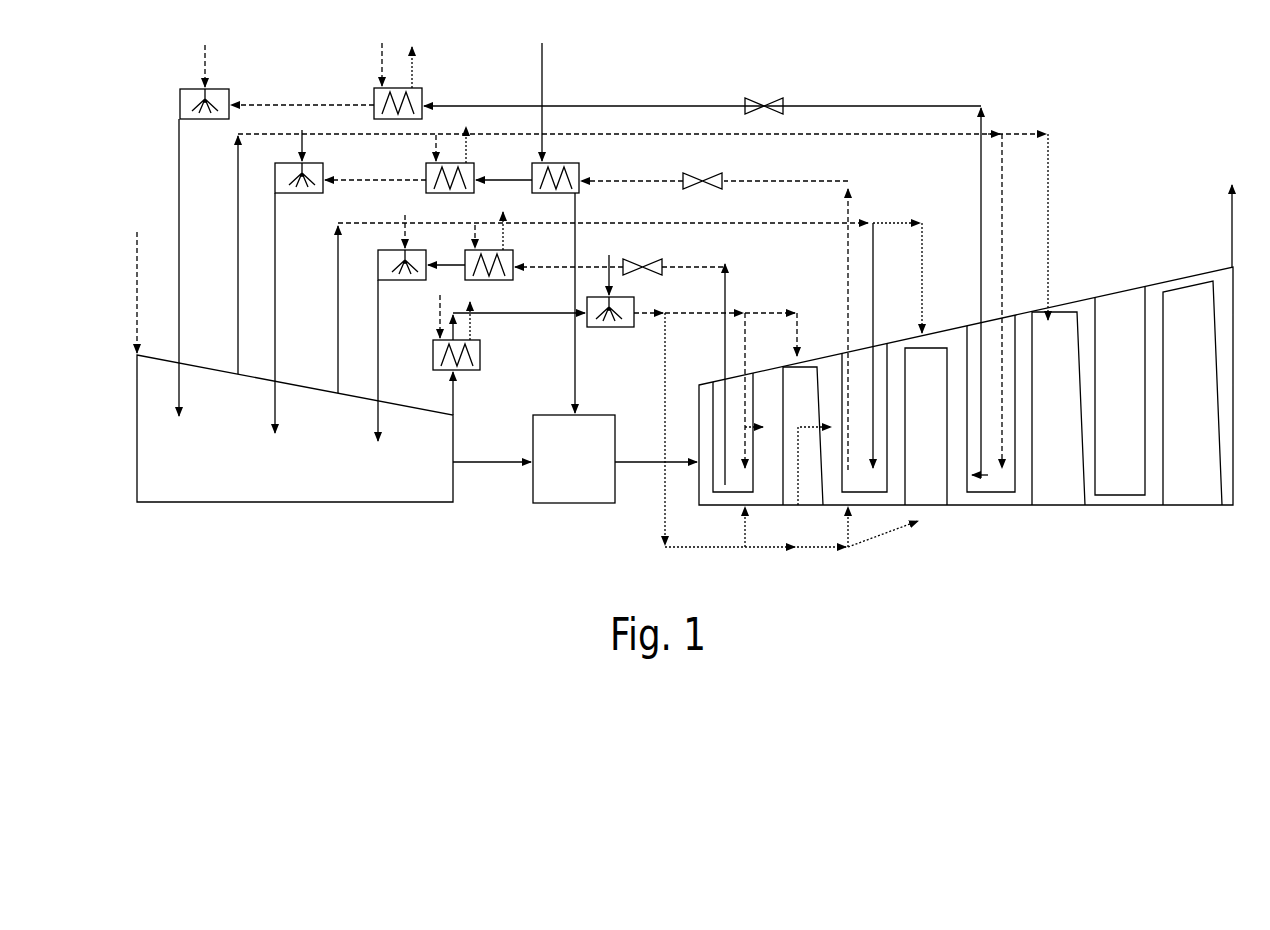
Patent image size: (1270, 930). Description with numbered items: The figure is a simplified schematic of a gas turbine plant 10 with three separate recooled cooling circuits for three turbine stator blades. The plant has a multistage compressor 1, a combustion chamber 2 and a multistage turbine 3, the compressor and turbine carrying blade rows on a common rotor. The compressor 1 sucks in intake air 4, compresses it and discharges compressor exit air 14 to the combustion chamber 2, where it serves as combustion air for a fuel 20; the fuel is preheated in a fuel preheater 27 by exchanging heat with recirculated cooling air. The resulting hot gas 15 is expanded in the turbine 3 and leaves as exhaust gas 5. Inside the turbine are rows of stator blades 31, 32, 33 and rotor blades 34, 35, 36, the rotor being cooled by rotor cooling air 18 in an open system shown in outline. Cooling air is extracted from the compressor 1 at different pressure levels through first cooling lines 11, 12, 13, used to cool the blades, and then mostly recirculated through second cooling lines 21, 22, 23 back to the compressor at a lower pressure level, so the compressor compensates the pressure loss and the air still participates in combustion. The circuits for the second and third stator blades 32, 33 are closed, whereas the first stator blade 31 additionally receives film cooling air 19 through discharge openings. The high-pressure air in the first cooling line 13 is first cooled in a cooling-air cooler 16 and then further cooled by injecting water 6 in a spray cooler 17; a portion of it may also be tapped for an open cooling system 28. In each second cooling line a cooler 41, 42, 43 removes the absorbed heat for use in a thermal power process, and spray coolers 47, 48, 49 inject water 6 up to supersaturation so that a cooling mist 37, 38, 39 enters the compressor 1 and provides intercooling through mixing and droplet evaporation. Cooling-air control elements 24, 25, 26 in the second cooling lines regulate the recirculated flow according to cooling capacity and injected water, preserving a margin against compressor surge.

The multistage compressor 1 is at (200, 464).
The combustion chamber 2 is at (562, 474).
The multistage turbine 3 is at (885, 474).
The intake air 4 is at (137, 245).
The exhaust gas 5 is at (1232, 200).
The water 6 is at (205, 48).
The gas turbine plant 10 is at (490, 560).
The first cooling line 11 is at (238, 345).
The first cooling line 12 is at (338, 355).
The first cooling line 13 is at (453, 405).
The compressor exit air 14 is at (492, 470).
The hot gas 15 is at (628, 465).
The cooling-air cooler 16 is at (482, 356).
The spray cooler 17 is at (884, 223).
The rotor cooling air 18 is at (1020, 134).
The film cooling air 19 is at (757, 427).
The fuel 20 is at (545, 70).
The second cooling line 21 is at (727, 268).
The second cooling line 22 is at (848, 180).
The second cooling line 23 is at (905, 106).
The cooling-air control element 24 is at (665, 265).
The cooling-air control element 25 is at (724, 180).
The cooling-air control element 26 is at (785, 103).
The fuel preheater 27 is at (580, 168).
The open cooling system 28 is at (766, 313).
The first stator blade 31 is at (733, 390).
The second stator blade 32 is at (862, 365).
The third stator blade 33 is at (995, 333).
The rotor blade 34 is at (800, 385).
The rotor blade 35 is at (912, 352).
The rotor blade 36 is at (1045, 325).
The cooling mist 37 is at (378, 360).
The cooling mist 38 is at (275, 358).
The cooling mist 39 is at (179, 330).
The cooler 41 is at (515, 262).
The cooler 42 is at (476, 168).
The cooler 43 is at (424, 92).
The spray cooler 47 is at (378, 265).
The spray cooler 48 is at (325, 168).
The spray cooler 49 is at (231, 92).